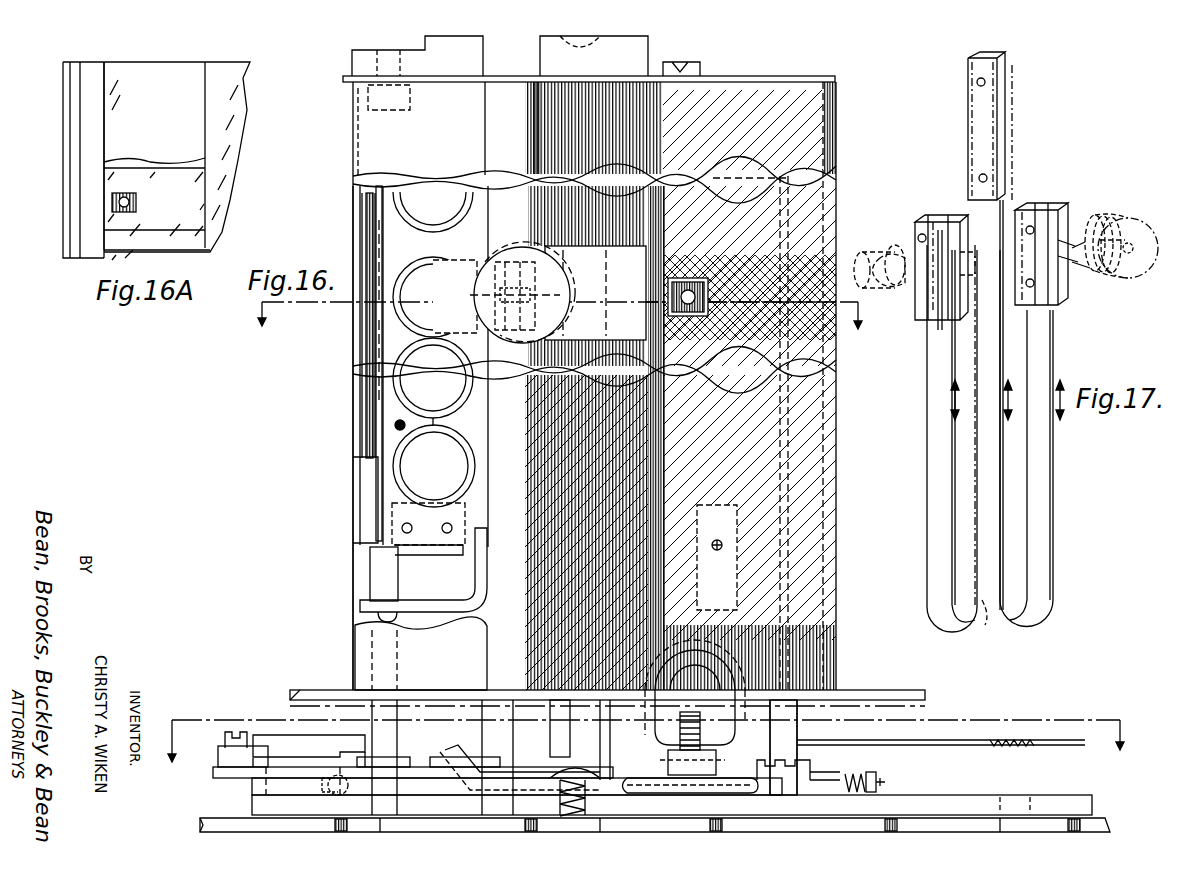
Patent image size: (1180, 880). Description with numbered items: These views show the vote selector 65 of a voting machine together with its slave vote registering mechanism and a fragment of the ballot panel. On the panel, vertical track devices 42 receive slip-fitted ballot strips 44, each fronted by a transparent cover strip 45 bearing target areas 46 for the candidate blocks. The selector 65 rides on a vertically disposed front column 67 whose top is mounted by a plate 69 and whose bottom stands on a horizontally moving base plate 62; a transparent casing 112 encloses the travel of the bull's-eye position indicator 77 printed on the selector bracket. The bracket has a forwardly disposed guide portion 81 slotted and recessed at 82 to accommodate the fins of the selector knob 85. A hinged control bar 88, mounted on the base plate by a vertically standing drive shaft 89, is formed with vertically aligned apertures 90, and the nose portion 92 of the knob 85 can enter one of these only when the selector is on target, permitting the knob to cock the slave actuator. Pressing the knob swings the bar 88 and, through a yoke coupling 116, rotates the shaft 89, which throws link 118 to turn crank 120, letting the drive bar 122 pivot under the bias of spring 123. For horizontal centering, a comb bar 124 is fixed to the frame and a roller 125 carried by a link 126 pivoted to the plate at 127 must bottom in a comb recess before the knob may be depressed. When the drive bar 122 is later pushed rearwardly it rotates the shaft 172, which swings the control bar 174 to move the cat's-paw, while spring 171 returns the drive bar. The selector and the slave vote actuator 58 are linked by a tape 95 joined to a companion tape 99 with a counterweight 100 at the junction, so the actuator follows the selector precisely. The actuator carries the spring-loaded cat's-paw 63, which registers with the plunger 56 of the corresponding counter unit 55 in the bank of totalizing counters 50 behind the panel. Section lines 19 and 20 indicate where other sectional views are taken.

In FIG. 16A, the vertical track device 42 is at (90, 66).
In FIG. 16A, the ballot strip 44 is at (175, 66).
In FIG. 16A, the transparent cover strip 45 is at (245, 62).
In FIG. 16A, the target area 46 is at (136, 205).
In FIG. 16, the target area 46 is at (692, 290).
In FIG. 16, the section line 19- 19 is at (556, 325).
In FIG. 16, the section line 20- 20 is at (643, 751).
In FIG. 16, the plate 69 is at (718, 76).
In FIG. 16, the front column 67 is at (366, 118).
In FIG. 16, the casing 112 is at (828, 126).
In FIG. 16, the control bar 174 is at (758, 177).
In FIG. 16, the guide portion 81 is at (690, 293).
In FIG. 16, the vote selector position indicator 77 is at (708, 292).
In FIG. 17, the vote selector position indicator 77 is at (928, 335).
In FIG. 16, the vote selector 65 is at (344, 210).
In FIG. 17, the vote selector 65 is at (902, 300).
In FIG. 16, the control bar 88 is at (378, 212).
In FIG. 16, the nose portion 92 is at (432, 300).
In FIG. 16, the selector knob 85 is at (507, 257).
In FIG. 16, the slot and recess 82 is at (530, 232).
In FIG. 16, the apertures 90 is at (442, 440).
In FIG. 16, the yoke coupling 116 is at (483, 576).
In FIG. 16, the drive shaft 89 is at (392, 728).
In FIG. 16, the base plate 62 is at (936, 800).
In FIG. 16, the comb bar 124 is at (1106, 830).
In FIG. 16, the pivot 127 is at (333, 755).
In FIG. 16, the link 126 is at (420, 768).
In FIG. 16, the link 118 is at (480, 760).
In FIG. 16, the roller 125 is at (633, 824).
In FIG. 16, the spring 123 is at (678, 730).
In FIG. 16, the drive bar 122 is at (668, 762).
In FIG. 16, the crank 120 is at (618, 790).
In FIG. 16, the shaft 172 is at (792, 742).
In FIG. 16, the spring 171 is at (855, 780).
In FIG. 17, the counterweight 100 is at (1015, 120).
In FIG. 17, the tape device 95 is at (930, 485).
In FIG. 17, the companion tape 99 is at (1045, 490).
In FIG. 17, the slave vote actuator 58 is at (1052, 200).
In FIG. 17, the cat's-paw 63 is at (1068, 262).
In FIG. 17, the plunger 56 is at (1082, 262).
In FIG. 17, the bank of totalizing counters 50 is at (1110, 296).
In FIG. 17, the counter unit 55 is at (1140, 262).